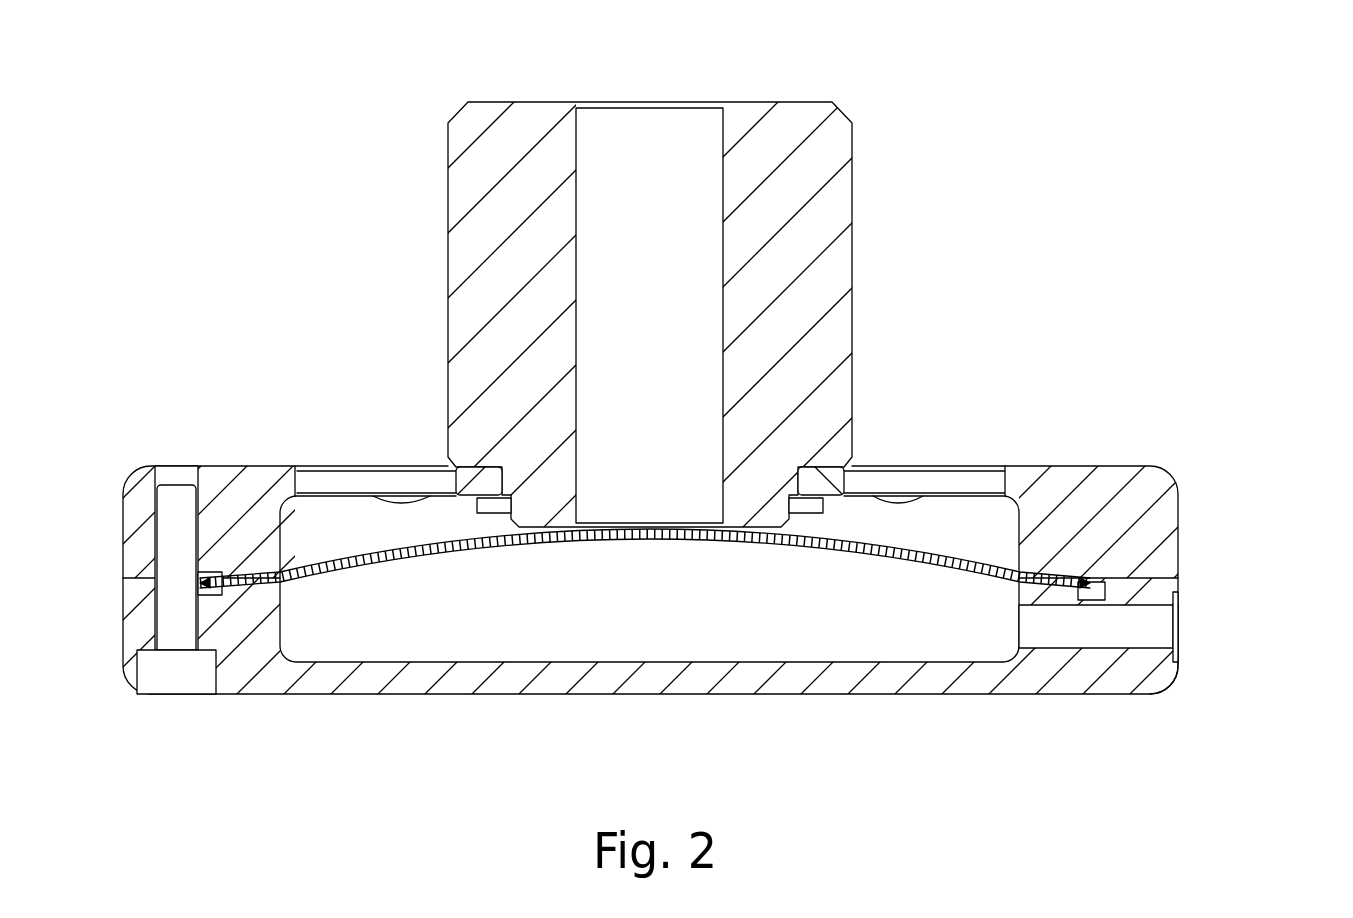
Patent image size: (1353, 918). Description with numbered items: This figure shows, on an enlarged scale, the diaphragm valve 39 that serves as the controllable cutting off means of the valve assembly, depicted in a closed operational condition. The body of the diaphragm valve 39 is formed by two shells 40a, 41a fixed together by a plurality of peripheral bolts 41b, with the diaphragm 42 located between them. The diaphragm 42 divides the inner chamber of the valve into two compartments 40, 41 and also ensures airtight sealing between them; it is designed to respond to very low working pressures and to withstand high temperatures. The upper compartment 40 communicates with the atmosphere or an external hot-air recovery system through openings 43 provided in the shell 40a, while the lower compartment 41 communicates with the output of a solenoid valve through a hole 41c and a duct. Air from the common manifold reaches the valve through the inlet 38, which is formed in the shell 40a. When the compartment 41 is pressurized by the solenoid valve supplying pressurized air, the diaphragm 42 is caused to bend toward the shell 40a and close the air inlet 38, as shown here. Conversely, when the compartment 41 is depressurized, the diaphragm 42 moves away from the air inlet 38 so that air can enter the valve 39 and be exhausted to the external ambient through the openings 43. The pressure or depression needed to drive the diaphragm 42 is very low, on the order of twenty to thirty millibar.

The inlet 38 is at (655, 147).
The diaphragm valve 39 is at (1176, 466).
The compartment 40 is at (950, 520).
The shell 40a is at (1163, 527).
The compartment 41 is at (875, 615).
The shell 41a is at (1158, 680).
The peripheral bolt 41b is at (173, 680).
The hole 41c is at (1082, 630).
The diaphragm 42 is at (460, 552).
The openings 43 is at (377, 480).